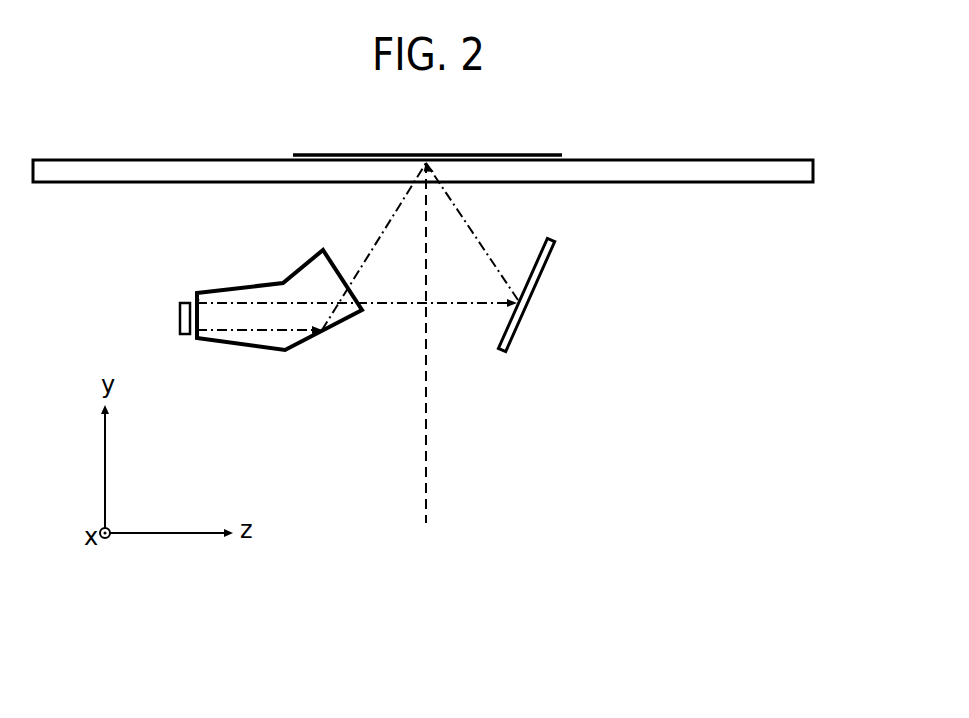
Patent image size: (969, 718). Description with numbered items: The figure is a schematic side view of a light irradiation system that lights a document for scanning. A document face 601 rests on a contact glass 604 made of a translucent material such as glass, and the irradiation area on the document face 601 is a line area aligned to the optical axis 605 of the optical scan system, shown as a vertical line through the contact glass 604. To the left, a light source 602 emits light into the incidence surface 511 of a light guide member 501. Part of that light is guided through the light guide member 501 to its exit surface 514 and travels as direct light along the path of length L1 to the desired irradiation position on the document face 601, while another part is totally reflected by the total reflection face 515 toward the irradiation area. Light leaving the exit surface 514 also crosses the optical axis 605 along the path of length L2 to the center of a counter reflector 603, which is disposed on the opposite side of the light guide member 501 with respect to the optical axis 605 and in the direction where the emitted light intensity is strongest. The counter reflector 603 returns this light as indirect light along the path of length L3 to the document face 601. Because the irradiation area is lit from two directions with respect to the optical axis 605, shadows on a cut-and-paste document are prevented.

The light guide member 501 is at (243, 345).
The incidence surface 511 is at (197, 300).
The exit surface 514 is at (355, 300).
The total reflection face 515 is at (330, 326).
The document face 601 is at (507, 156).
The light source 602 is at (183, 335).
The counter reflector 603 is at (547, 268).
The contact glass 604 is at (715, 160).
The optical axis of optical scan system 605 is at (430, 471).
The optical distance between exit surface center and irradiation position L1 is at (374, 246).
The optical distance between exit surface center and counter reflector center L2 is at (453, 288).
The optical distance between counter reflector and irradiation position L3 is at (470, 230).